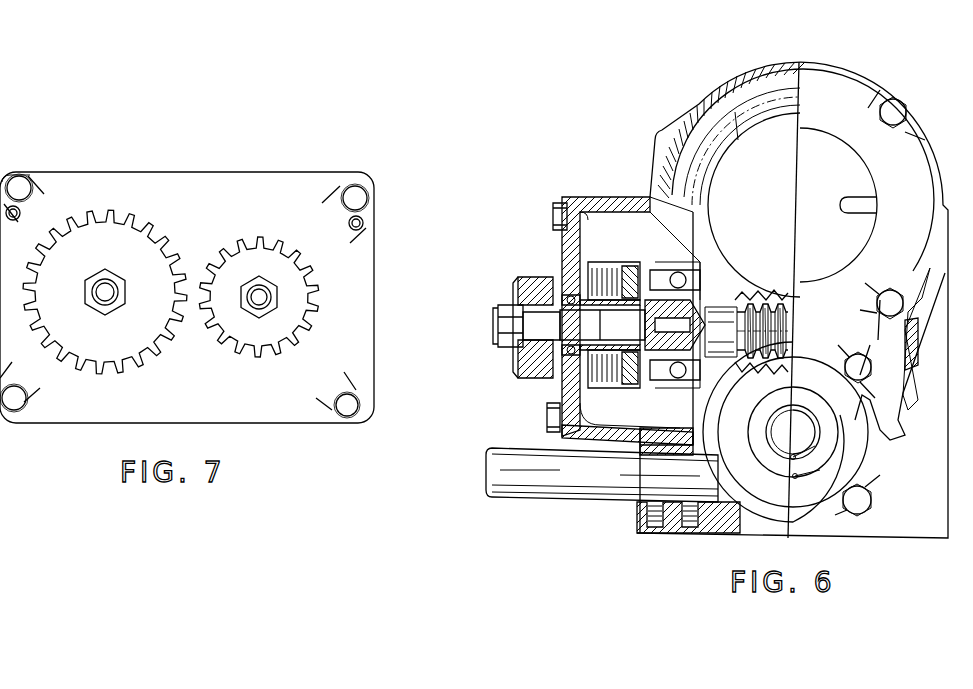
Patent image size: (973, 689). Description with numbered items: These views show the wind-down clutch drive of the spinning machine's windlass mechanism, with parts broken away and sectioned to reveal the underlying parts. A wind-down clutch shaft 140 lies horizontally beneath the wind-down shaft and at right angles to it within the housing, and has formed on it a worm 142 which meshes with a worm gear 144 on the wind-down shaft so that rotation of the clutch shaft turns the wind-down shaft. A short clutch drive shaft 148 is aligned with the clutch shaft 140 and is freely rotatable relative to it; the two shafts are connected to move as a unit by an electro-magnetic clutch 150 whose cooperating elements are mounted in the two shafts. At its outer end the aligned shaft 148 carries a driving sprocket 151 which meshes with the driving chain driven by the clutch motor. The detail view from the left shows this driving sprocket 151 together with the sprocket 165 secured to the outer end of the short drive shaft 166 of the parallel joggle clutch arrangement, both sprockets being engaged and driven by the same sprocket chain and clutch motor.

In FIG. 6, the wind-down clutch shaft 140 is at (717, 307).
In FIG. 6, the worm 142 is at (775, 286).
In FIG. 6, the worm gear 144 is at (737, 112).
In FIG. 7, the clutch drive shaft 148 is at (257, 300).
In FIG. 6, the clutch drive shaft 148 is at (532, 322).
In FIG. 6, the electro-magnetic clutch 150 is at (604, 264).
In FIG. 7, the driving sprocket 151 is at (283, 248).
In FIG. 6, the driving sprocket 151 is at (530, 282).
In FIG. 7, the sprocket 165 is at (125, 236).
In FIG. 7, the short drive shaft 166 is at (105, 300).